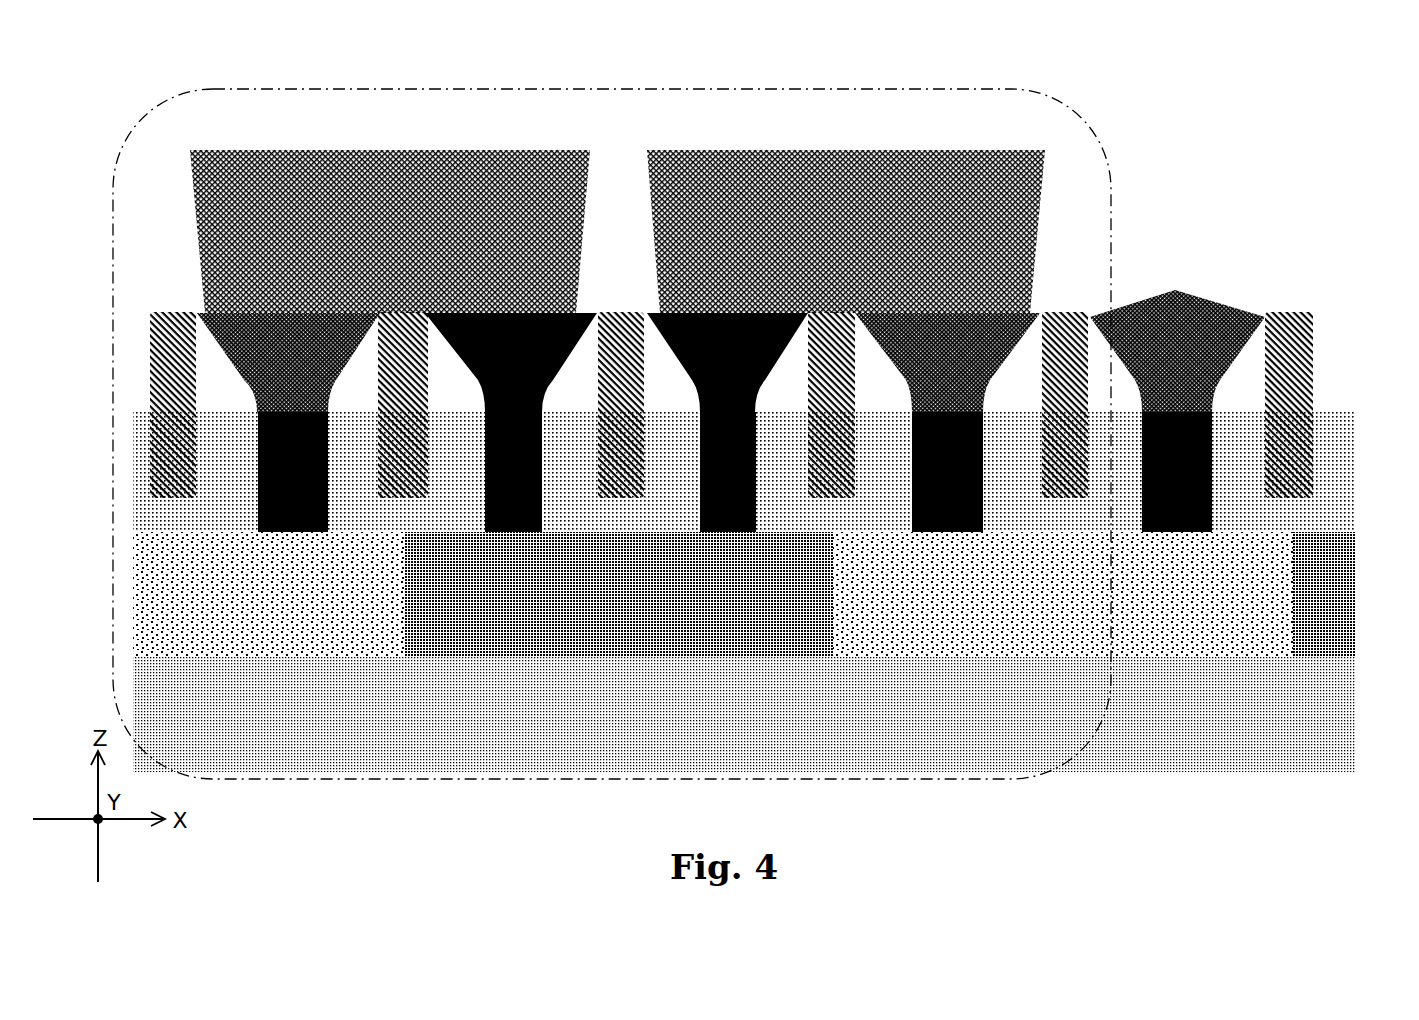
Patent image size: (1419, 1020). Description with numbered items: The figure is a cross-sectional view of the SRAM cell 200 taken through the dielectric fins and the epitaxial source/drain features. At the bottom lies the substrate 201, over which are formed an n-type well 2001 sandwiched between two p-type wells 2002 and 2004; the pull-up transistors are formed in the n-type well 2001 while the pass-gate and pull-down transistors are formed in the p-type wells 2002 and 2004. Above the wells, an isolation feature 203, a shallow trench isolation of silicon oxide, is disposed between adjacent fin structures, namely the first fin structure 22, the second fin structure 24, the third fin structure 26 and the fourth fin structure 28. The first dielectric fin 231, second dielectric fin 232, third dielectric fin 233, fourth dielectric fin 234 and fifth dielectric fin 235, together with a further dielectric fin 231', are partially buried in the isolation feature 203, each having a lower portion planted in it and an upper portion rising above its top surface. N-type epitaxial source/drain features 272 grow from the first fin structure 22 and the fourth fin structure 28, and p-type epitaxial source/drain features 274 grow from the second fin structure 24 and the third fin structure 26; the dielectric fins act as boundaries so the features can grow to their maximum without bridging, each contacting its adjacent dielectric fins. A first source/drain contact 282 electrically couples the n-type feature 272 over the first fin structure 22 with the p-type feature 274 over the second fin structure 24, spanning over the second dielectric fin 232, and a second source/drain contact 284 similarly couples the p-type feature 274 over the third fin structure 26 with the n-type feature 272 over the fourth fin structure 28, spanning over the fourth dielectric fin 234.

The SRAM cell 200 is at (143, 130).
The substrate 201 is at (733, 702).
The isolation feature 203 is at (162, 523).
The n-type well 2001 is at (619, 594).
The p-type well 2002 is at (250, 570).
The p-type well 2004 is at (1094, 594).
The first fin structure 22 is at (293, 472).
The second fin structure 24 is at (513, 472).
The third fin structure 26 is at (728, 472).
The fourth fin structure 28 is at (947, 472).
The first dielectric fin 231 is at (135, 396).
The dielectric fin 231' is at (1336, 402).
The second dielectric fin 232 is at (402, 400).
The third dielectric fin 233 is at (622, 407).
The fourth dielectric fin 234 is at (832, 412).
The fifth dielectric fin 235 is at (1060, 408).
The n-type epitaxial source/drain feature 272 is at (731, 351).
The p-type epitaxial source/drain feature 274 is at (616, 362).
The first source/drain contact 282 is at (390, 231).
The second source/drain contact 284 is at (846, 231).